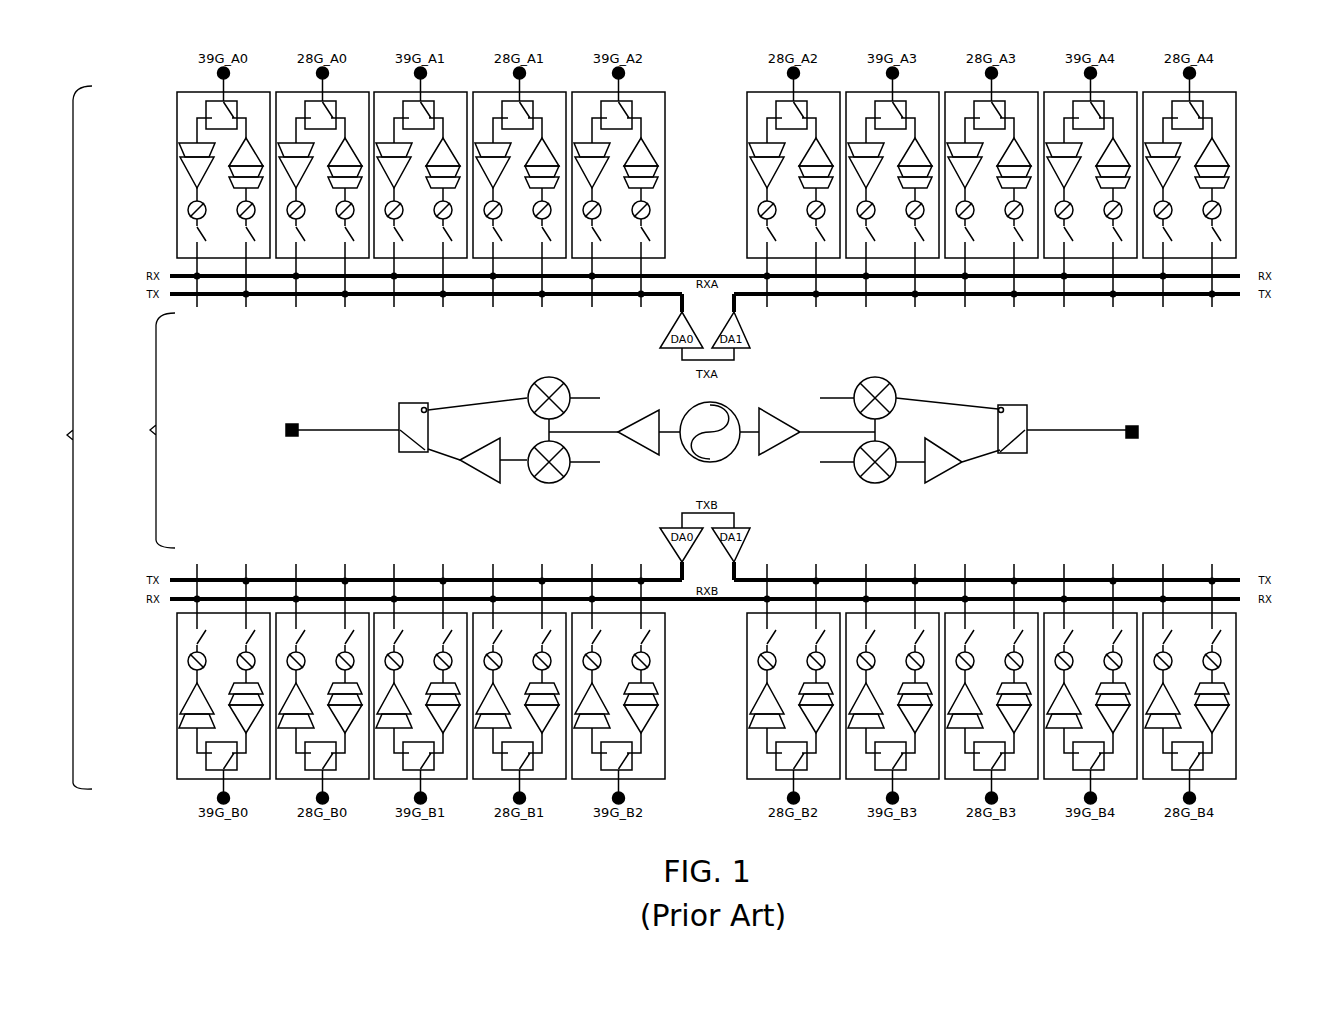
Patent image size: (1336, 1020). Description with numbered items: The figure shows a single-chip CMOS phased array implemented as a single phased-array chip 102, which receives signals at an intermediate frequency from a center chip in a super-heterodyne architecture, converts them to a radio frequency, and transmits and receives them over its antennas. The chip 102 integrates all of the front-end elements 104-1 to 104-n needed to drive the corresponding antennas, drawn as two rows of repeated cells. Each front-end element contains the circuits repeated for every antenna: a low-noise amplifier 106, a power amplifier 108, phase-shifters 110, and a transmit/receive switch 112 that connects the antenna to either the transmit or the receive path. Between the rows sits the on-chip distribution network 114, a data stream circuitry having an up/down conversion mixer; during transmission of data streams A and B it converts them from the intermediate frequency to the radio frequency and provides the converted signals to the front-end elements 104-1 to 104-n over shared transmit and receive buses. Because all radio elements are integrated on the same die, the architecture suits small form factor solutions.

The single phased-array chip 102 is at (66, 435).
The front-end element 104-1 is at (177, 126).
The front-end element 104-n is at (1237, 668).
The low-noise amplifier 106 is at (1150, 140).
The power amplifier 108 is at (1228, 162).
The phase-shifters 110 is at (1222, 212).
The transmit/receive switch 112 is at (1203, 109).
The on-chip distribution network 114 is at (150, 430).